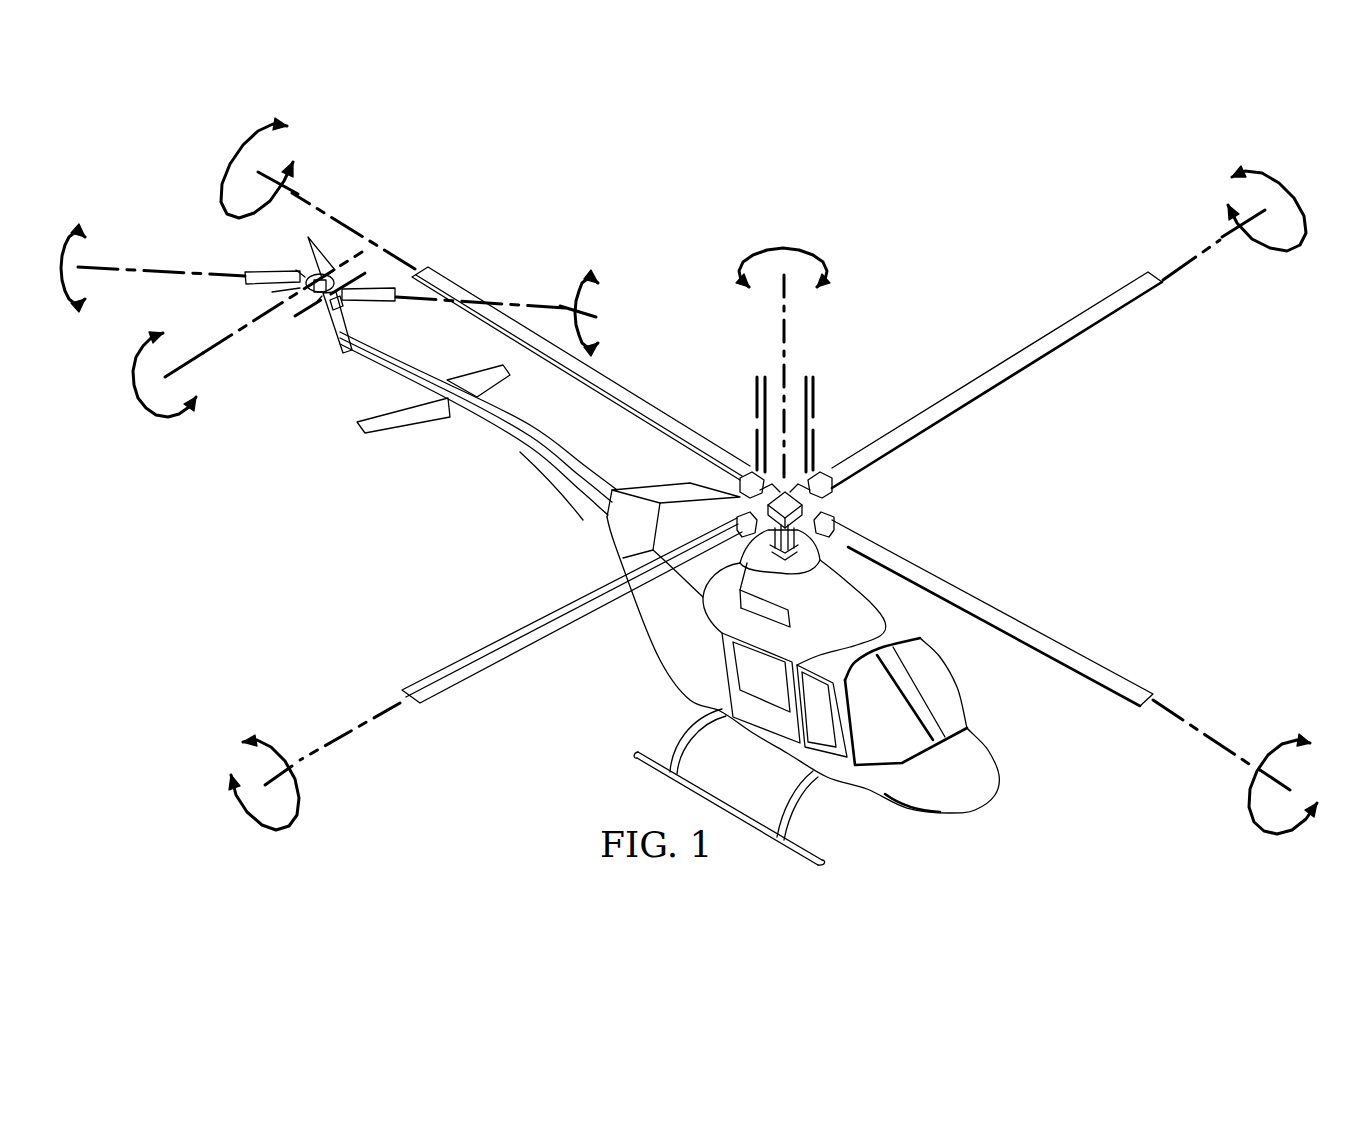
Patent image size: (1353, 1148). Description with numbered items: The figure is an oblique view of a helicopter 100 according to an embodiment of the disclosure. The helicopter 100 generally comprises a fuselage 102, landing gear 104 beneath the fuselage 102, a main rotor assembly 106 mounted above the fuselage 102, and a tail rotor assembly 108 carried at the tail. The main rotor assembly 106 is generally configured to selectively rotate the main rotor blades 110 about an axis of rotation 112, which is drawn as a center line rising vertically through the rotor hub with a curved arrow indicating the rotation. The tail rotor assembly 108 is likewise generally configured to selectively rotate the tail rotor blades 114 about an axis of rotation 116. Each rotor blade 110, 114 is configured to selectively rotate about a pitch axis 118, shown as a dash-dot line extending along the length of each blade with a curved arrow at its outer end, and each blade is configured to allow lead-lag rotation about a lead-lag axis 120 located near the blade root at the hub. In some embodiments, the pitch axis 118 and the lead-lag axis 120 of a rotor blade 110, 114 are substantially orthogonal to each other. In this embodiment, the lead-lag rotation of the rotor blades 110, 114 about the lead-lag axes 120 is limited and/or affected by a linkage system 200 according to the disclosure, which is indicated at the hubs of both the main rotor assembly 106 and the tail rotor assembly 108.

The helicopter 100 is at (752, 214).
The fuselage 102 is at (1000, 773).
The landing gear 104 is at (806, 855).
The main rotor assembly 106 is at (744, 355).
The tail rotor assembly 108 is at (197, 224).
The main rotor blades 110 is at (624, 386).
The axis of rotation 112 is at (787, 346).
The tail rotor blades 114 is at (252, 272).
The axis of rotation 116 is at (233, 338).
The pitch axis 118 is at (342, 223).
The lead-lag axis 120 is at (757, 470).
The linkage system 200 is at (740, 497).